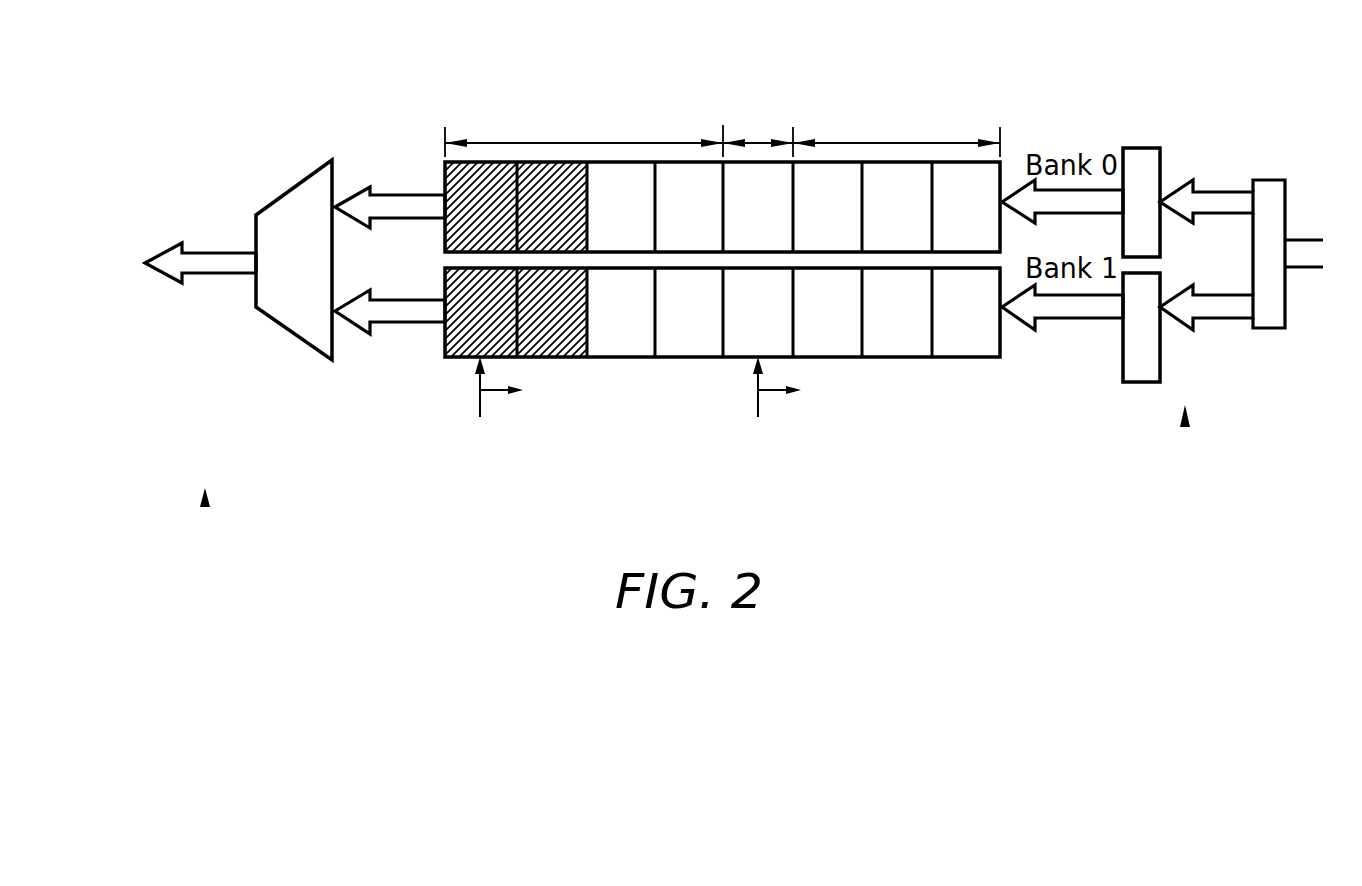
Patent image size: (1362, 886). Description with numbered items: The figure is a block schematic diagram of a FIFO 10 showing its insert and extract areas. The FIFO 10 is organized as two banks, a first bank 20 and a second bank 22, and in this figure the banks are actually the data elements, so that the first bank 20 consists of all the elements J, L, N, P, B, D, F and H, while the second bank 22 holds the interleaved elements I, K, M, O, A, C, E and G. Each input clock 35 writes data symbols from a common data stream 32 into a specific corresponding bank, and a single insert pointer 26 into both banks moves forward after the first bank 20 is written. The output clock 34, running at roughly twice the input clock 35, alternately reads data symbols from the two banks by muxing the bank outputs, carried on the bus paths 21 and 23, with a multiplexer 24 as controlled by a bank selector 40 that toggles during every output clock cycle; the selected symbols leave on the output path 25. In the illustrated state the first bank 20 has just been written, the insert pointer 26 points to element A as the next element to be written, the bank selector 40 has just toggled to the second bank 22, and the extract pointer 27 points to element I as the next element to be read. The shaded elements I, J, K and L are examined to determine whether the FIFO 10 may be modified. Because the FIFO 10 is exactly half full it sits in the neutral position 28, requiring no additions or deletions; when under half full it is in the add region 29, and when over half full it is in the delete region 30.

The FIFO 10 is at (847, 432).
The bank 0 20 is at (1014, 188).
The bank 0 output bus 21 is at (348, 193).
The bank 1 22 is at (1030, 326).
The bank 1 output bus 23 is at (343, 323).
The multiplexer 24 is at (283, 195).
The output bus 25 is at (155, 275).
The insert pointer 26 is at (758, 400).
The extract pointer 27 is at (480, 404).
The neutral position 28 is at (758, 140).
The add region 29 is at (573, 143).
The delete region 30 is at (895, 143).
The common data stream 32 is at (1300, 237).
The output clock 34 is at (205, 505).
The input clock 35 is at (1185, 425).
The bank selector 40 is at (293, 335).